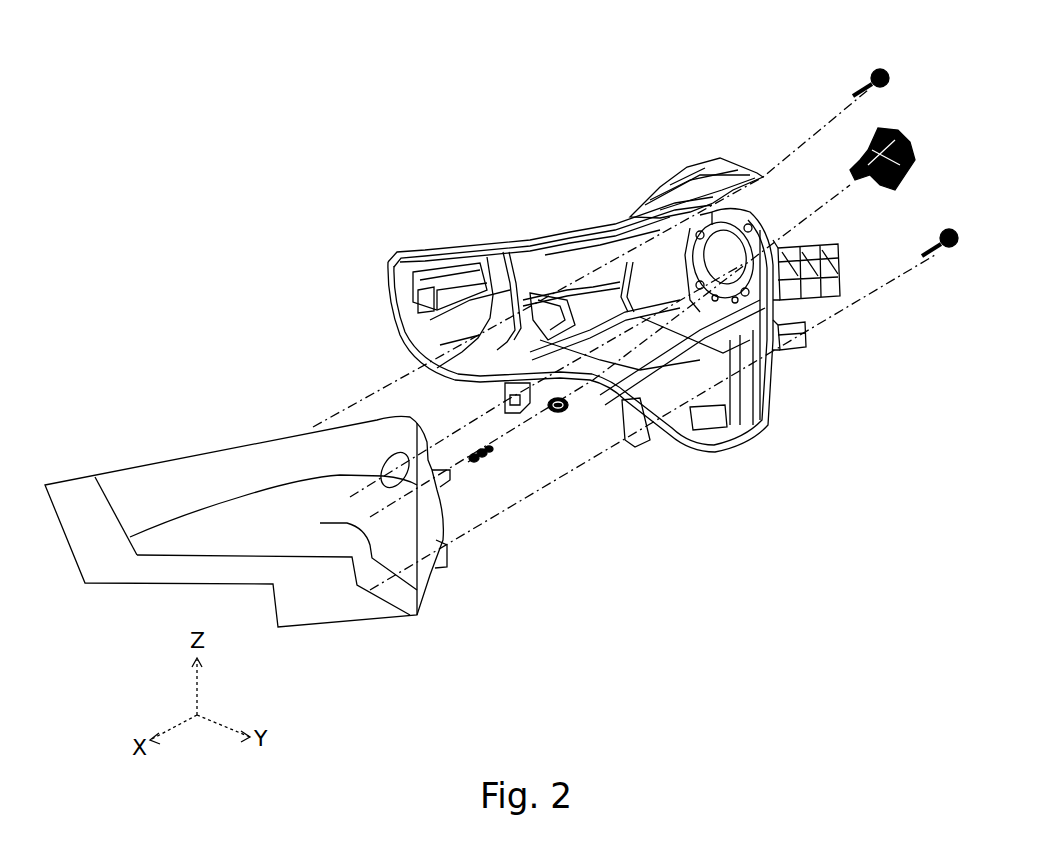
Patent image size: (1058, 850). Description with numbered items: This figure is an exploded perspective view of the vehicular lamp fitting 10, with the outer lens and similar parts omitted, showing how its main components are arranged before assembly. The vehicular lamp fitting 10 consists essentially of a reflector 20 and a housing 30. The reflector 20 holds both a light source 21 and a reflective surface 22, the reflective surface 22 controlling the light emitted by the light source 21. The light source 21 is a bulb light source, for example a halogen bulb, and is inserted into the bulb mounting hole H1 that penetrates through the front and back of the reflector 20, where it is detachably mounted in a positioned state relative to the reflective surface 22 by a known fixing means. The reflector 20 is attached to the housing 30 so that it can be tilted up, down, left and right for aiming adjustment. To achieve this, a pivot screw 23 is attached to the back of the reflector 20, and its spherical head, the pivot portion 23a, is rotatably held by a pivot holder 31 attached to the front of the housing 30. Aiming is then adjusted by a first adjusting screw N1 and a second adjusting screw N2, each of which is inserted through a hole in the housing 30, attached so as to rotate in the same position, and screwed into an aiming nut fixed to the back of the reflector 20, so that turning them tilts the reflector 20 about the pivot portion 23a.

The vehicular lamp fitting 10 is at (530, 115).
The reflector 20 is at (278, 437).
The reflective surface 22 is at (243, 490).
The bulb mounting hole H1 is at (398, 466).
The pivot screw 23 is at (480, 462).
The pivot portion 23a is at (493, 455).
The pivot holder 31 is at (562, 413).
The housing 30 is at (580, 226).
The light source 21 is at (890, 133).
The first adjusting screw N1 is at (882, 64).
The second adjusting screw N2 is at (948, 226).